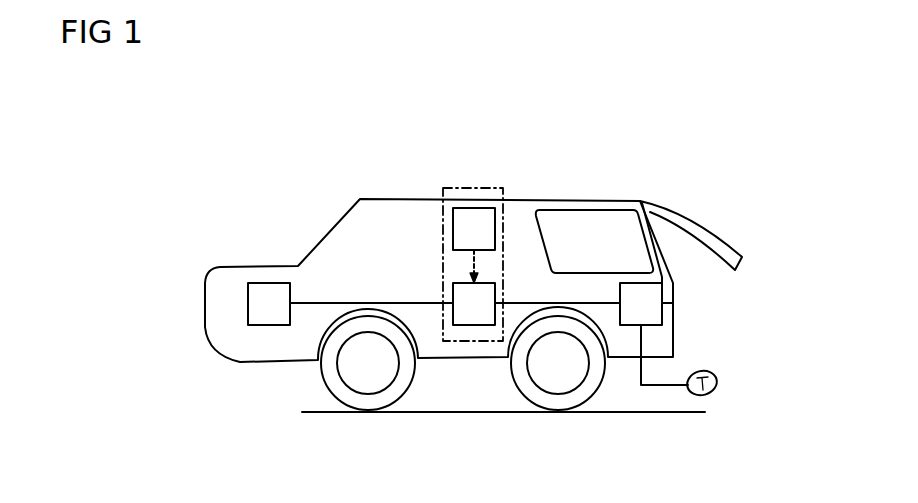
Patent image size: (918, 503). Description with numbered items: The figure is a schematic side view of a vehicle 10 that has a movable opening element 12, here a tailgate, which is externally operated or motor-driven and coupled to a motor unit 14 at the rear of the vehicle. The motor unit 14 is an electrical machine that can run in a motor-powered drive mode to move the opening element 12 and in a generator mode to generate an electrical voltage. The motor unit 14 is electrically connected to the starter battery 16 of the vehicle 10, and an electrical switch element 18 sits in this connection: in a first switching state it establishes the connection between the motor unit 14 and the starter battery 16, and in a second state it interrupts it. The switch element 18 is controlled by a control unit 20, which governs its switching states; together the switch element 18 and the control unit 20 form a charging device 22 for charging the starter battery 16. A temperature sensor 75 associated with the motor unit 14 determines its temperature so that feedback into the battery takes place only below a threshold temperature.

The vehicle 10 is at (617, 143).
The movable opening element 12 is at (702, 217).
The motor unit 14 is at (673, 303).
The starter battery 16 is at (270, 283).
The electrical switch element 18 is at (463, 325).
The control unit 20 is at (478, 208).
The charging device 22 is at (445, 190).
The temperature sensor 75 is at (717, 371).